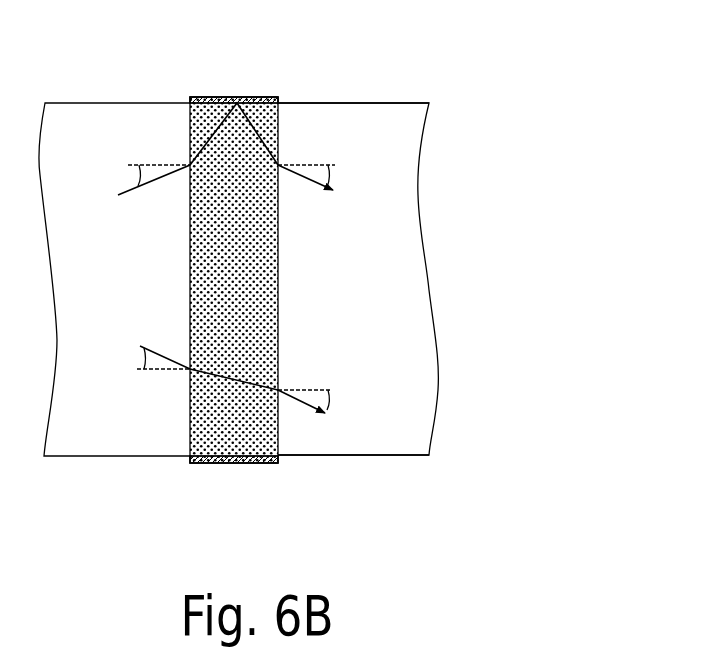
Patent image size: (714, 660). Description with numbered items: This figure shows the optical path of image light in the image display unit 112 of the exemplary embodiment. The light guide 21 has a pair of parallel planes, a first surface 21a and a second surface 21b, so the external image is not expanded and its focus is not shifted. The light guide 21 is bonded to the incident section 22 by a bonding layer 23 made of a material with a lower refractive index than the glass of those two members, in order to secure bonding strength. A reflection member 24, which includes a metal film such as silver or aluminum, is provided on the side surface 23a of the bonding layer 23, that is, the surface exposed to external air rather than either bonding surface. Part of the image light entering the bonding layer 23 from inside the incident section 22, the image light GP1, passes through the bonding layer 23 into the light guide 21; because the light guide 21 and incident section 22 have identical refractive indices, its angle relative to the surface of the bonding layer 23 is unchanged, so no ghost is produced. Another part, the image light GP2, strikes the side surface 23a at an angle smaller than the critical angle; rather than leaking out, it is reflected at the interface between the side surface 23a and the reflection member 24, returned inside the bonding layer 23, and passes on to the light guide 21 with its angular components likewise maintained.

The image display unit 112 is at (412, 73).
The light guide 21 is at (342, 443).
The first surface 21a is at (390, 457).
The second surface 21b is at (333, 103).
The incident section 22 is at (125, 445).
The bonding layer 23 is at (278, 292).
The side surface 23a is at (262, 97).
The reflection member 24 is at (205, 97).
The image light GP1 is at (152, 350).
The image light GP2 is at (160, 178).